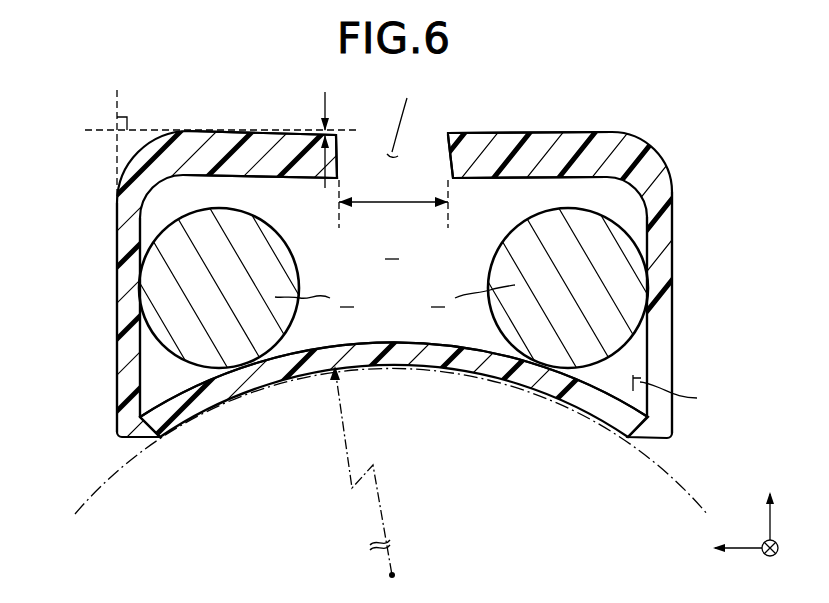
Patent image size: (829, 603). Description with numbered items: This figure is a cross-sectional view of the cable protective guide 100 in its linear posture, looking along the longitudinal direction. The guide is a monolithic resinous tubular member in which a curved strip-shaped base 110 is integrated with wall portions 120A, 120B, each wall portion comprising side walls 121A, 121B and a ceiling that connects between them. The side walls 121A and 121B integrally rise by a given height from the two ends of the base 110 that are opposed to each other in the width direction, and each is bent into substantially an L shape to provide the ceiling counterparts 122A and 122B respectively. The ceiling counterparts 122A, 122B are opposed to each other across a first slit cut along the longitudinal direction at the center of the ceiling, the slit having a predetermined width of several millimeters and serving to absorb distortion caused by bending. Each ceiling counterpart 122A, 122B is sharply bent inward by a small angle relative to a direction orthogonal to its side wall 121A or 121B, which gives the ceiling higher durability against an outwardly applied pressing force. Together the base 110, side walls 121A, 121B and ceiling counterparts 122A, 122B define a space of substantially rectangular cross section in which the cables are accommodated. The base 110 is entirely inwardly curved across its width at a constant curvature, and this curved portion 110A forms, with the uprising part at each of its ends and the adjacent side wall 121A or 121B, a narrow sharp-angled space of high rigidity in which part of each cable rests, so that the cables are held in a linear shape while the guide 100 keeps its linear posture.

The cable protective guide 100 is at (128, 88).
The side wall 120B is at (86, 145).
The side wall 120A is at (655, 150).
The side wall 121B is at (130, 242).
The side wall 121A is at (662, 243).
The ceiling counterpart 122B is at (287, 144).
The ceiling counterpart 122A is at (550, 148).
The base 110 is at (407, 350).
The curved portion 110A is at (497, 368).